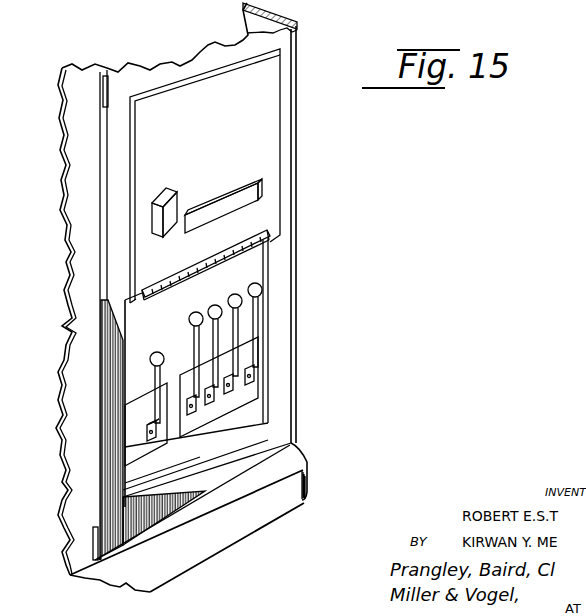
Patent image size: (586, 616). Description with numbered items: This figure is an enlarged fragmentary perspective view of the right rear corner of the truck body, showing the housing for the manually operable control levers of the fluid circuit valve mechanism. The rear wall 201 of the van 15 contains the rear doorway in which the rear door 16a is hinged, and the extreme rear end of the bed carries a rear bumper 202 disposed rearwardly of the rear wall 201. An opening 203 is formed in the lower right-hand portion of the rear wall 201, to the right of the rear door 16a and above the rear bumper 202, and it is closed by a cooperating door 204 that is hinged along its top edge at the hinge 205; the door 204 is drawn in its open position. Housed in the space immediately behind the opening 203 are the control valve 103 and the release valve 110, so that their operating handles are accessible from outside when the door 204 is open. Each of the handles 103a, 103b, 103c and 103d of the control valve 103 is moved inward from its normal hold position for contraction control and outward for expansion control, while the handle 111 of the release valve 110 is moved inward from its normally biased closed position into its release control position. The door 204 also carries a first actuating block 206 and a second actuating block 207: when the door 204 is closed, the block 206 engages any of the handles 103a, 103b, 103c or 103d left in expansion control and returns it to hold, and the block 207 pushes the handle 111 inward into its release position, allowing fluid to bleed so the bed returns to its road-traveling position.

The van 15 is at (297, 34).
The rear door 16a is at (77, 242).
The control valve 103 is at (243, 393).
The handle of the control valve 103a is at (191, 321).
The handle of the control valve 103b is at (222, 328).
The handle of the control valve 103c is at (239, 318).
The handle of the control valve 103d is at (253, 328).
The release valve 110 is at (137, 426).
The handle of the release valve 111 is at (134, 381).
The rear wall 201 is at (147, 70).
The rear bumper 202 is at (220, 545).
The opening 203 is at (268, 270).
The door 204 is at (267, 133).
The hinge 205 is at (249, 234).
The first actuating block 206 is at (224, 202).
The second actuating block 207 is at (170, 200).